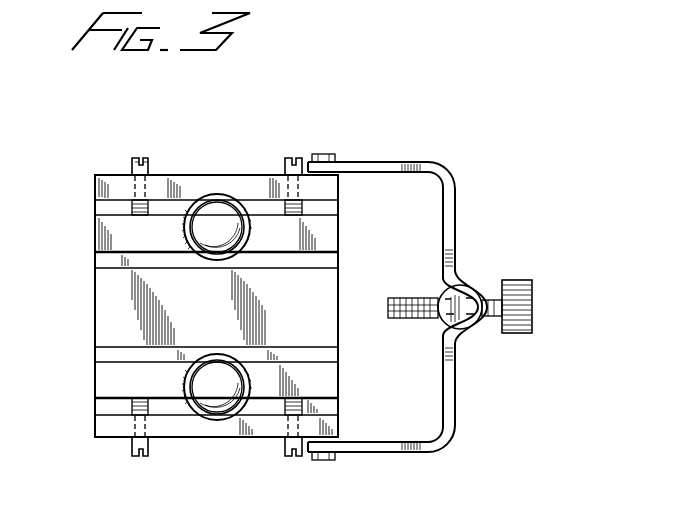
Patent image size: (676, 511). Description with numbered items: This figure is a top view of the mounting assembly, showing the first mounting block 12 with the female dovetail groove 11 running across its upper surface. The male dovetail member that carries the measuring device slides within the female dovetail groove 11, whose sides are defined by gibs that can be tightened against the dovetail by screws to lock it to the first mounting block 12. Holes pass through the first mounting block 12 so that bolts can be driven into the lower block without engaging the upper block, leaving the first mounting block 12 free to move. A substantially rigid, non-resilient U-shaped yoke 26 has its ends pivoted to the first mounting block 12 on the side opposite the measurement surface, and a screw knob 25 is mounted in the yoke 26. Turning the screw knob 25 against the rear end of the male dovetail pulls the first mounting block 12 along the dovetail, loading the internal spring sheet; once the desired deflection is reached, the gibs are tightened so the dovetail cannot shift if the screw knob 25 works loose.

The female dovetail groove 11 is at (100, 305).
The first mounting block 12 is at (95, 338).
The U-shaped yoke 26 is at (455, 216).
The screw knob 25 is at (517, 280).